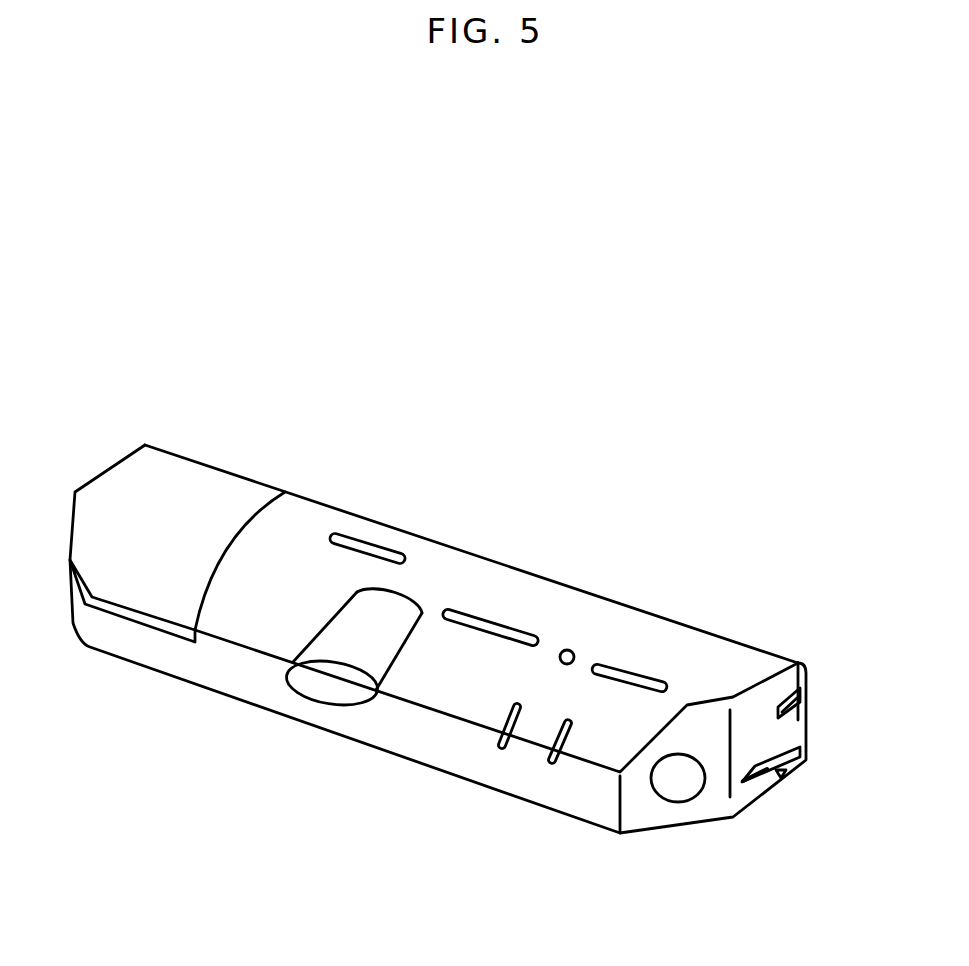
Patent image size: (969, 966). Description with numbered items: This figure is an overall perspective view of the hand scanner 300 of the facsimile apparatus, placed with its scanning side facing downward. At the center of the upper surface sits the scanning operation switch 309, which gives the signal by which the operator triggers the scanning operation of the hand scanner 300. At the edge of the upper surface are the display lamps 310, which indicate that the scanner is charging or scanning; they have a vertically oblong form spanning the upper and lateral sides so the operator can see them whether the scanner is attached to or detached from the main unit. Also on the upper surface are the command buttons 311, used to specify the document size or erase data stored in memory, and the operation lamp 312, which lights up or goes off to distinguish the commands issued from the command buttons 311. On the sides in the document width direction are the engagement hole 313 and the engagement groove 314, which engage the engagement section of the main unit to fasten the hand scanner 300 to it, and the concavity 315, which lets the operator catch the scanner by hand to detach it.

The hand scanner 300 is at (195, 458).
The scanning operation switch 309 is at (327, 690).
The display lamps 310 is at (502, 746).
The command buttons 311 is at (637, 683).
The operation lamp 312 is at (558, 657).
The engagement hole 313 is at (798, 662).
The engagement groove 314 is at (812, 735).
The concavity 315 is at (668, 790).